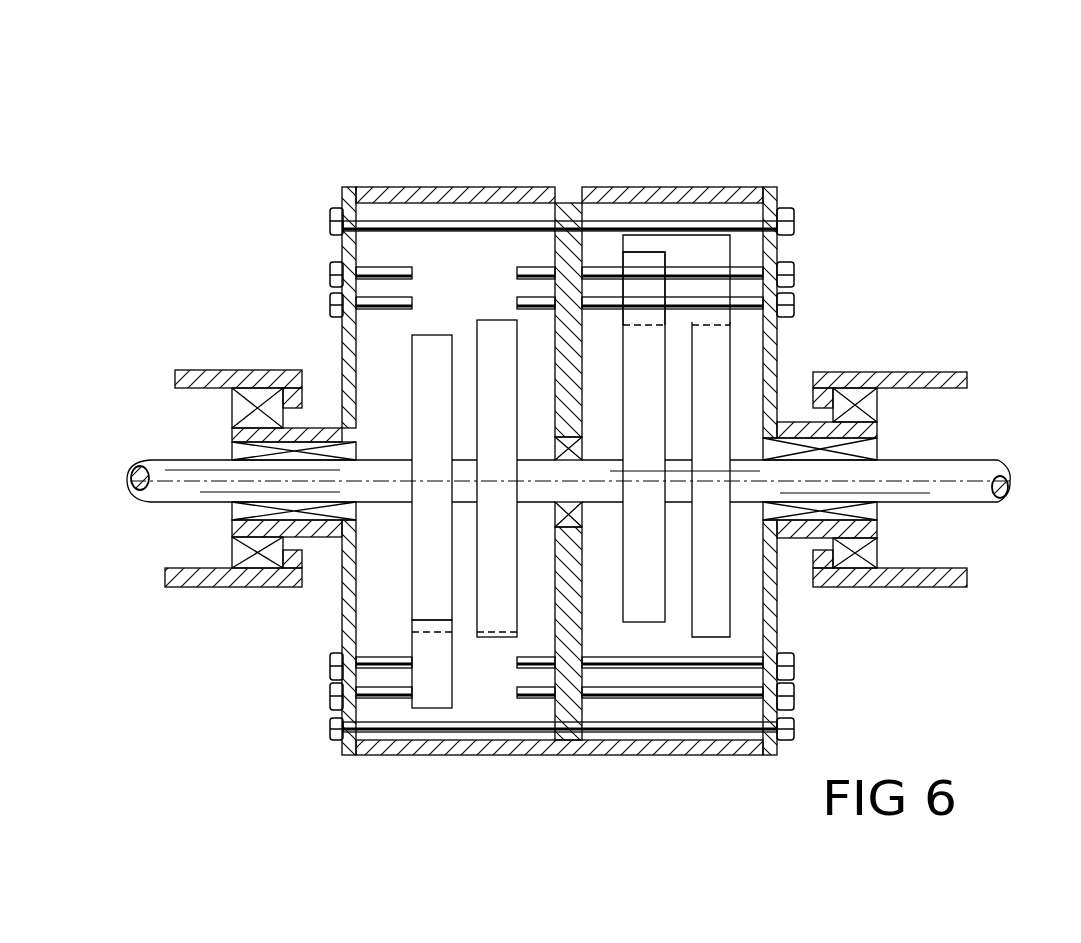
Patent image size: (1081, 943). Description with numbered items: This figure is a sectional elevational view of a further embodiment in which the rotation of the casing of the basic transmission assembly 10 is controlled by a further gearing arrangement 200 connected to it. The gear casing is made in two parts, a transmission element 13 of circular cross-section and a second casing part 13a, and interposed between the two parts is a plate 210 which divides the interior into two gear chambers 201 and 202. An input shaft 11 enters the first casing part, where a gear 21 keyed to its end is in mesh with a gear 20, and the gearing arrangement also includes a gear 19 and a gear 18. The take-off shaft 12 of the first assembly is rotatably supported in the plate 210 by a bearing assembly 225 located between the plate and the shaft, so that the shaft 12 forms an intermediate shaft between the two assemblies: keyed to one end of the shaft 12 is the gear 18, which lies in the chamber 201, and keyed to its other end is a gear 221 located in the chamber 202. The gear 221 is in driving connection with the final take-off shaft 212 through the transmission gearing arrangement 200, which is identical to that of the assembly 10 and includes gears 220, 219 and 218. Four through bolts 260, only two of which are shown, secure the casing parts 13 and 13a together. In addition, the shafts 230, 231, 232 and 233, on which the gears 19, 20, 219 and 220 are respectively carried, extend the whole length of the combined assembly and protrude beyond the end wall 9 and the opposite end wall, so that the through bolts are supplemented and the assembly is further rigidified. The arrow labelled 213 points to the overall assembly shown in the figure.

The end wall 9 is at (345, 382).
The transmission assembly 10 is at (420, 768).
The input shaft 11 is at (157, 460).
The take-off shaft 12 is at (603, 478).
The transmission element 13 is at (343, 188).
The casing part 13a is at (708, 192).
The gear 18 is at (513, 378).
The gear 19 is at (482, 690).
The gear 20 is at (430, 672).
The gear 21 is at (445, 378).
The further gearing arrangement 200 is at (700, 705).
The gear chamber 201 is at (495, 238).
The gear chamber 202 is at (600, 250).
The plate 210 is at (566, 692).
The final take-off shaft 212 is at (927, 472).
The housing assembly 213 is at (418, 170).
The gear 218 is at (715, 357).
The gear 219 is at (688, 258).
The gear 220 is at (645, 290).
The gear 221 is at (647, 548).
The bearing assembly 225 is at (553, 518).
The shaft 230 is at (353, 703).
The shaft 231 is at (382, 663).
The shaft 232 is at (548, 277).
The shaft 233 is at (398, 303).
The through bolts 260 is at (508, 228).